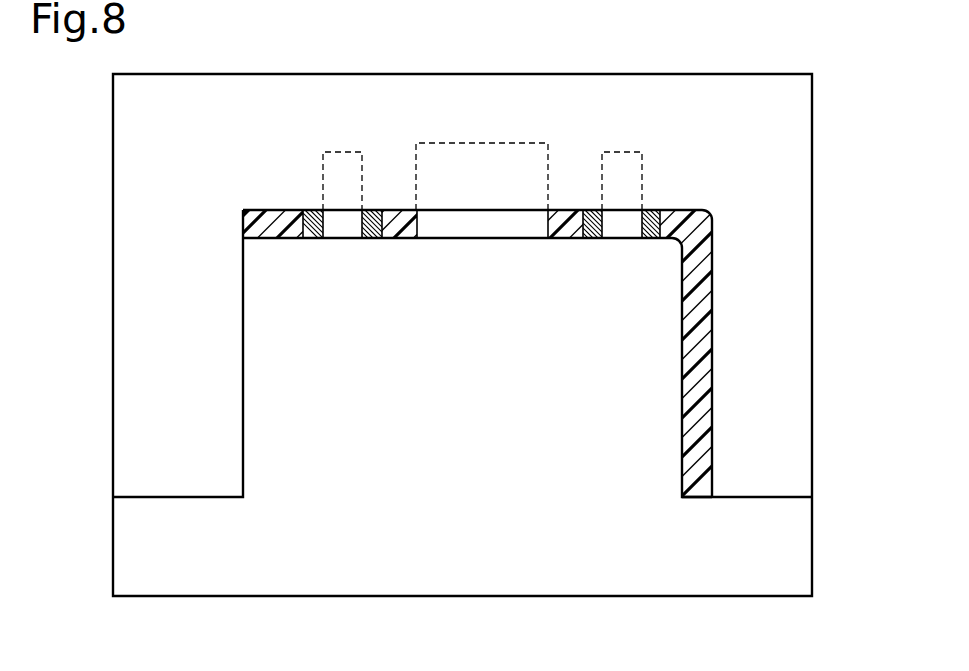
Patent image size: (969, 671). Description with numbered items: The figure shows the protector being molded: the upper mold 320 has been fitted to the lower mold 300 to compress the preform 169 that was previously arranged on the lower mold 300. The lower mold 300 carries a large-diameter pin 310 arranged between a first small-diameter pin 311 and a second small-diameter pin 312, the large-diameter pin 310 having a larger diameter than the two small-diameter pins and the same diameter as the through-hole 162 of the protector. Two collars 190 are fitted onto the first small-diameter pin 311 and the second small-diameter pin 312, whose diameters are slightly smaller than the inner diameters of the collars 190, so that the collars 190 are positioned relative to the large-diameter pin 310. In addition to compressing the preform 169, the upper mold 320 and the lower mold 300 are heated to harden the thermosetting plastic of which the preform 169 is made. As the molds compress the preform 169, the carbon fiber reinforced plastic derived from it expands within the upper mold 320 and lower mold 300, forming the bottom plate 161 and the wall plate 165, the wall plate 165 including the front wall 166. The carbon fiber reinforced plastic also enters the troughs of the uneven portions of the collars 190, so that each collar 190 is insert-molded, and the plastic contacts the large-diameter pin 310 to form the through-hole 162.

The lower mold 300 is at (232, 596).
The large-diameter pin 310 is at (491, 143).
The first small-diameter pin 311 is at (642, 173).
The second small-diameter pin 312 is at (322, 173).
The upper mold 320 is at (812, 302).
The bottom plate 161 is at (268, 239).
The through-hole 162 is at (415, 226).
The wall plate 165 is at (703, 427).
The front wall 166 is at (712, 352).
The preform 169 is at (704, 211).
The collar 190 is at (373, 239).